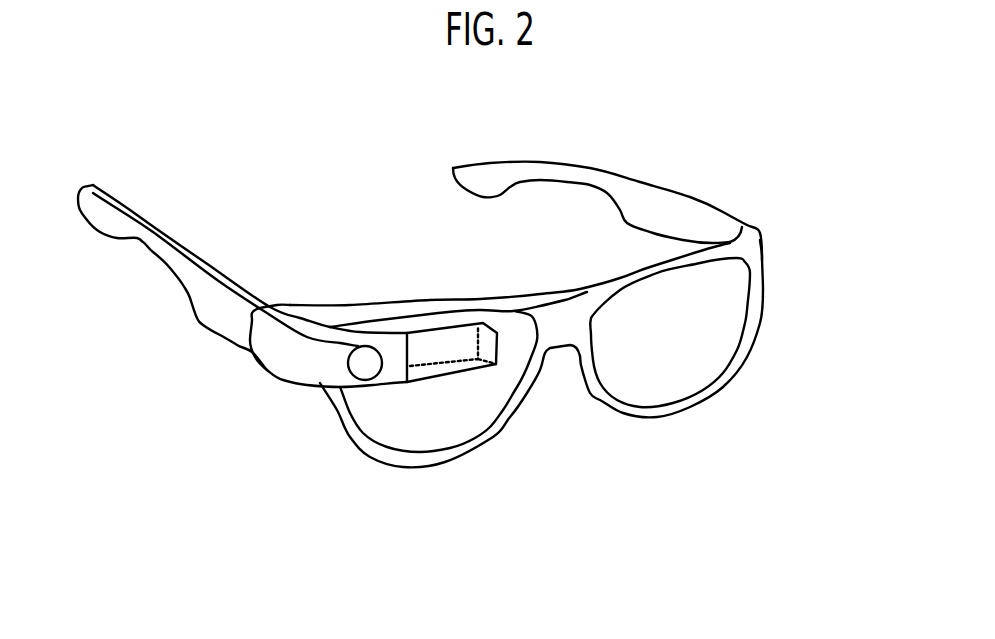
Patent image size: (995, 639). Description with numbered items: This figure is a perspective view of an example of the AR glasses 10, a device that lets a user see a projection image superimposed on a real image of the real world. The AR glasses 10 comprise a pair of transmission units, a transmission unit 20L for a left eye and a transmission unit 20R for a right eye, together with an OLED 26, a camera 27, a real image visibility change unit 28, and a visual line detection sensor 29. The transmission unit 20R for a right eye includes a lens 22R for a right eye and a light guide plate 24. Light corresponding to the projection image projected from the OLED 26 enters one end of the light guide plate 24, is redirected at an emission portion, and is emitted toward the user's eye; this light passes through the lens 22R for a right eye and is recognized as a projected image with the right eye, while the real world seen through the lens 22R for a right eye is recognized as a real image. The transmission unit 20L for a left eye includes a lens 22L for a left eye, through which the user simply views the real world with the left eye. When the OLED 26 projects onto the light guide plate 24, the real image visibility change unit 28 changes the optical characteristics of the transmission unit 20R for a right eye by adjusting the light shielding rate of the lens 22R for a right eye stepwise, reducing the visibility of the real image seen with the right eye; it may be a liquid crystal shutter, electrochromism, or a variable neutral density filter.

The AR glasses 10 is at (752, 93).
The transmission unit for a right eye 20R is at (364, 484).
The transmission unit for a left eye 20L is at (703, 408).
The lens for a right eye 22R is at (428, 438).
The lens for a left eye 22L is at (648, 393).
The light guide plate 24 is at (428, 336).
The OLED 26 is at (297, 345).
The camera 27 is at (368, 357).
The real image visibility change unit 28 is at (507, 334).
The visual line detection sensor 29 is at (313, 357).